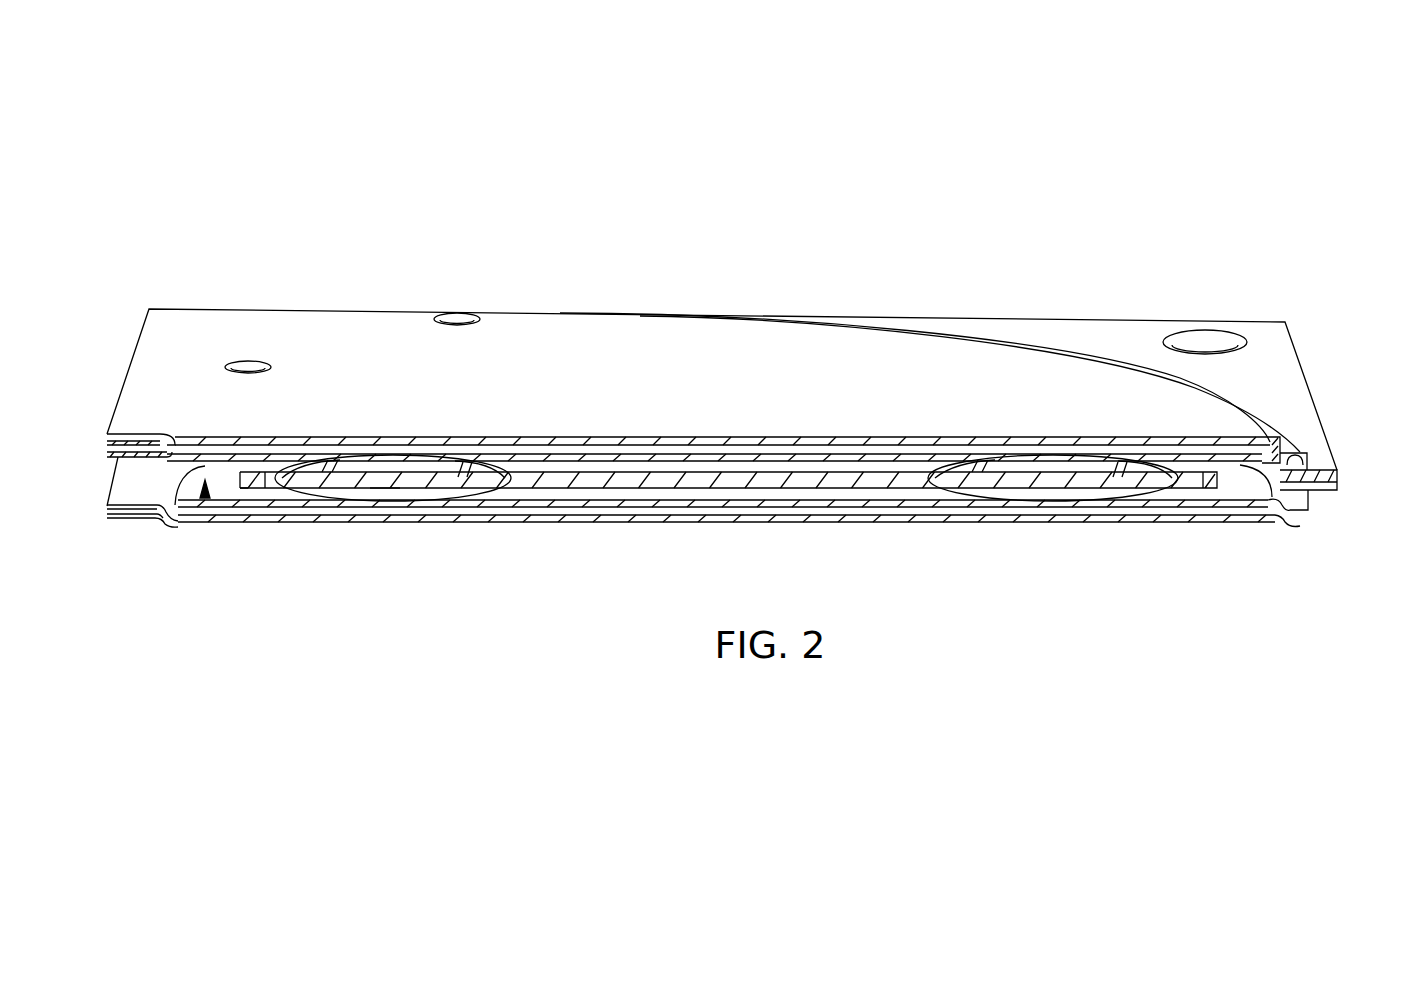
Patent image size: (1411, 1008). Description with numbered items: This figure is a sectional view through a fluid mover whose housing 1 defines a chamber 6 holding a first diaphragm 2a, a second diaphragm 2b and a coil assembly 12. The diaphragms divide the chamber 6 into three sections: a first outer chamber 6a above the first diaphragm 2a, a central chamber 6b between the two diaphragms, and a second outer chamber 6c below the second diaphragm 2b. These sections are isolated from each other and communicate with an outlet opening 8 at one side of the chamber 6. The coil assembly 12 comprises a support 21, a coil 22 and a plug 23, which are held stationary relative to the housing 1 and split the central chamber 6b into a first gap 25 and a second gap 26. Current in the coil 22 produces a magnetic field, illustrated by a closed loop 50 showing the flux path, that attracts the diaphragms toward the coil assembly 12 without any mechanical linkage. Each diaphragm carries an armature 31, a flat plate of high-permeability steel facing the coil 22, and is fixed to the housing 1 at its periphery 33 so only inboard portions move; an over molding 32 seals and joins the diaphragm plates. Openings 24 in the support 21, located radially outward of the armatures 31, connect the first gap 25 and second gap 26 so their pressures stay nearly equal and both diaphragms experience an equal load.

The housing 1 is at (316, 330).
The outlet opening 8 is at (117, 473).
The chamber 6 is at (207, 498).
The first outer chamber 6a is at (782, 450).
The first diaphragm 2a is at (805, 460).
The plug 23 is at (655, 485).
The first gap 25 is at (625, 471).
The second gap 26 is at (615, 492).
The coil assembly 12 is at (555, 482).
The support 21 is at (250, 487).
The coil 22 is at (385, 485).
The closed loop 50 is at (470, 497).
The armature 31 is at (733, 503).
The second diaphragm 2b is at (837, 503).
The second outer chamber 6c is at (918, 515).
The central chamber 6b is at (1230, 484).
The over molding 32 is at (1223, 450).
The periphery 33 is at (1270, 443).
The openings 24 is at (1305, 473).